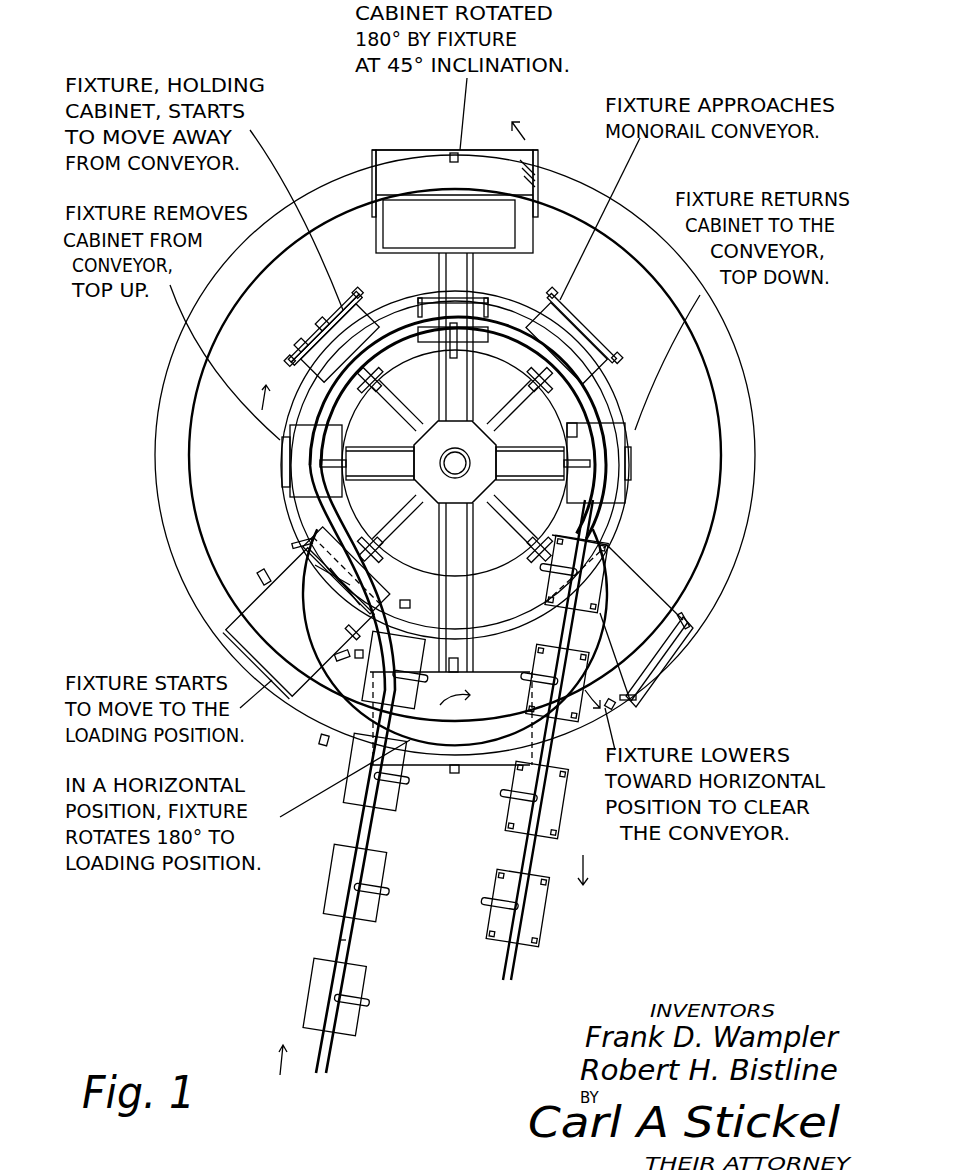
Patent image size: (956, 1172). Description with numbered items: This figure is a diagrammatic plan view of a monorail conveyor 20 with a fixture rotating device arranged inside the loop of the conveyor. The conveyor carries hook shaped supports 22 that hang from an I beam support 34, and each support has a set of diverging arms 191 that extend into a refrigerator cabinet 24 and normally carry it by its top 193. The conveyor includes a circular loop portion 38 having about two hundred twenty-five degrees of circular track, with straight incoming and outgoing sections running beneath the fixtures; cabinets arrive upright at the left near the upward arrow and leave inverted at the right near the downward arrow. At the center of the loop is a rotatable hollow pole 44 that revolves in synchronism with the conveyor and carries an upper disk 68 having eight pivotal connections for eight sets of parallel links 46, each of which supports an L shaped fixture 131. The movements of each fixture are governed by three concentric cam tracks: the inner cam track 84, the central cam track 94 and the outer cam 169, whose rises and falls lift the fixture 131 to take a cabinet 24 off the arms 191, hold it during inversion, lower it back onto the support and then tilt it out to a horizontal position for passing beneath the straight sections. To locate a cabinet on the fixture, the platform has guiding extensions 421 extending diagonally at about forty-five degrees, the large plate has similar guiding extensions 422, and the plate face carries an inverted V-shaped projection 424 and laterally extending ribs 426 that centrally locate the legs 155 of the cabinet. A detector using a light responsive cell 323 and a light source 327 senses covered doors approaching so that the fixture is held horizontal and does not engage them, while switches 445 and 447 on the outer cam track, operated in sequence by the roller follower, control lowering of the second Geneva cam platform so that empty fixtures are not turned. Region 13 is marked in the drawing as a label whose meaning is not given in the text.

The fixture tilting region 13 is at (584, 600).
The monorail conveyor 20 is at (345, 930).
The hook shaped supports 22 is at (458, 350).
The refrigerator cabinets 24 is at (400, 170).
The I beam support 34 is at (346, 945).
The circular loop portion 38 is at (398, 323).
The rotatable hollow pole 44 is at (470, 464).
The sets of parallel links 46 is at (506, 555).
The upper disk 68 is at (410, 490).
The inner cam track 84 is at (435, 590).
The central cam track 94 is at (610, 521).
The L shaped fixture 131 is at (530, 160).
The legs of the cabinet 155 is at (515, 150).
The outer cam 169 is at (755, 497).
The diverging arms 191 is at (490, 310).
The top of the cabinet 193 is at (347, 323).
The light responsive cell 323 is at (358, 658).
The light source 327 is at (422, 590).
The guiding extensions of the platform 421 is at (300, 543).
The guiding extensions of the plate 422 is at (263, 580).
The inverted V-shaped projection 424 is at (335, 582).
The laterally extending ribs 426 is at (312, 565).
The switch 445 is at (611, 708).
The switch 447 is at (323, 745).